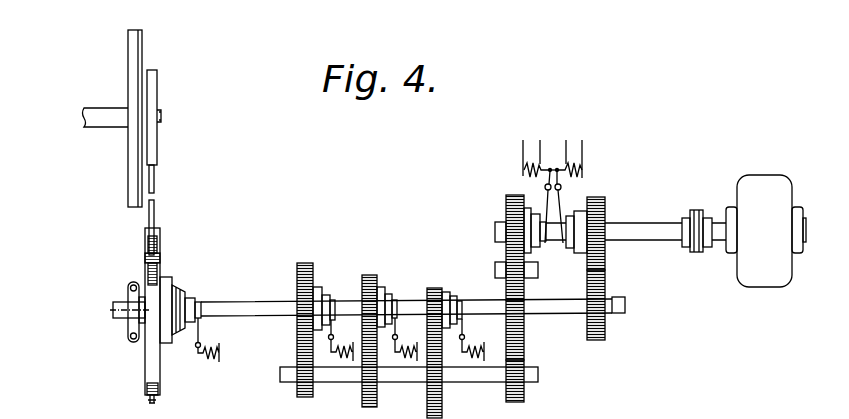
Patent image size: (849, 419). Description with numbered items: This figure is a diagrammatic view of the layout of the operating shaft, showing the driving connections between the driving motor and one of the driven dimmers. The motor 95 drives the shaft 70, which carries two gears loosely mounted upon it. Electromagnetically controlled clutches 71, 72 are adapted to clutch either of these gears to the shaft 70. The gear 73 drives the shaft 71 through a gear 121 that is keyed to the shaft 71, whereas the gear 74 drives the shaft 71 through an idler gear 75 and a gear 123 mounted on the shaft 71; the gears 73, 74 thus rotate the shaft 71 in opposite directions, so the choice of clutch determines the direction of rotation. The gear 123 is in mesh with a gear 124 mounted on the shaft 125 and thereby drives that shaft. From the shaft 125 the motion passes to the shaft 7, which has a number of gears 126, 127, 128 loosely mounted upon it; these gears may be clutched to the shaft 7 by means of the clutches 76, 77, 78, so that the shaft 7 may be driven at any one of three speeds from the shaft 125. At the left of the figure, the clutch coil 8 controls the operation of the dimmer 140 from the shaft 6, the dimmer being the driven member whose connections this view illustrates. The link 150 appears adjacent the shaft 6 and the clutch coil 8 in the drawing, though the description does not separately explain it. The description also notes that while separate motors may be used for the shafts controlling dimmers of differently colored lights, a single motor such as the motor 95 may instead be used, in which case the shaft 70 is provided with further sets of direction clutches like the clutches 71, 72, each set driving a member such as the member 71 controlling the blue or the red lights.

The dimmer 140 is at (160, 75).
The link 150 is at (128, 290).
The shaft 6 is at (103, 298).
The shaft 7 is at (258, 300).
The clutch coil 8 is at (212, 356).
The gear 128 is at (313, 270).
The gear 127 is at (366, 275).
The gear 126 is at (437, 282).
The clutch 78 is at (348, 365).
The clutch 77 is at (413, 368).
The clutch 76 is at (488, 368).
The shaft 125 is at (540, 375).
The gear 74 is at (506, 208).
The gear 123 is at (525, 330).
The gear 124 is at (520, 401).
The idler gear 75 is at (496, 255).
The shaft 70 is at (652, 231).
The electromagnetically controlled clutch 72 is at (562, 188).
The shaft 71 is at (545, 188).
The gear 73 is at (598, 200).
The gear 121 is at (600, 341).
The motor 95 is at (783, 190).